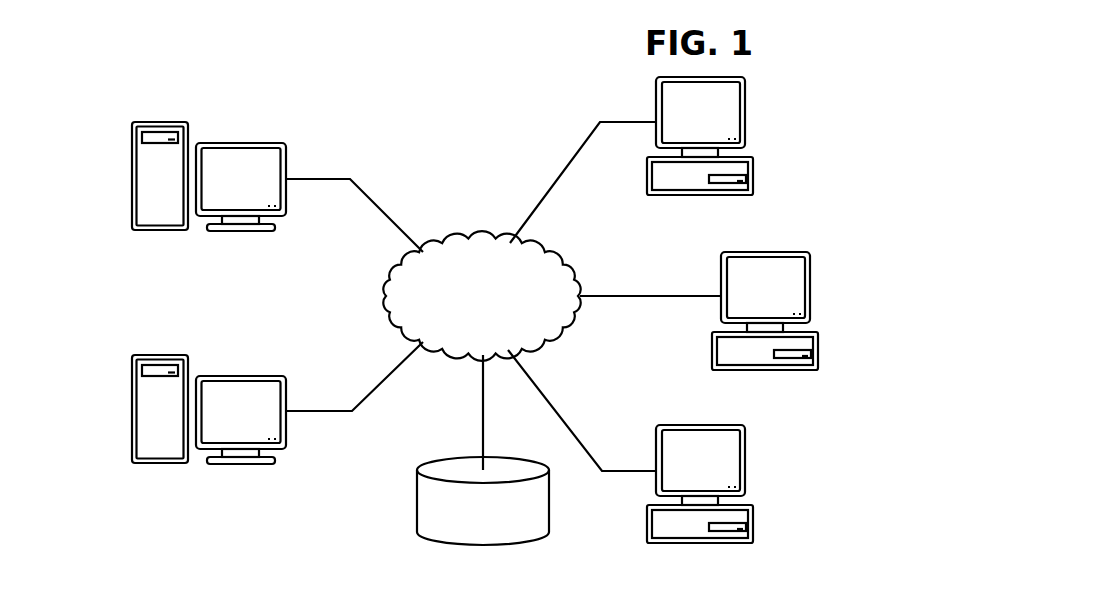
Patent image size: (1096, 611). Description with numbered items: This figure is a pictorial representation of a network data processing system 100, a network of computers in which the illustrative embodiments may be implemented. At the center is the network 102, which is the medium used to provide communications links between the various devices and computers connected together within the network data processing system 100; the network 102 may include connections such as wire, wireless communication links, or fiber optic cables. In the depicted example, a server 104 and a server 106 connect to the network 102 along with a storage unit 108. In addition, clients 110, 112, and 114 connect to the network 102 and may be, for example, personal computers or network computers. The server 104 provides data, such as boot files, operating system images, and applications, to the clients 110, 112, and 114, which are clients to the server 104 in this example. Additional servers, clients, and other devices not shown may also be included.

The network data processing system 100 is at (354, 88).
The network 102 is at (478, 237).
The server 104 is at (131, 175).
The server 106 is at (131, 408).
The storage unit 108 is at (416, 500).
The client 110 is at (753, 177).
The client 112 is at (820, 350).
The client 114 is at (753, 527).